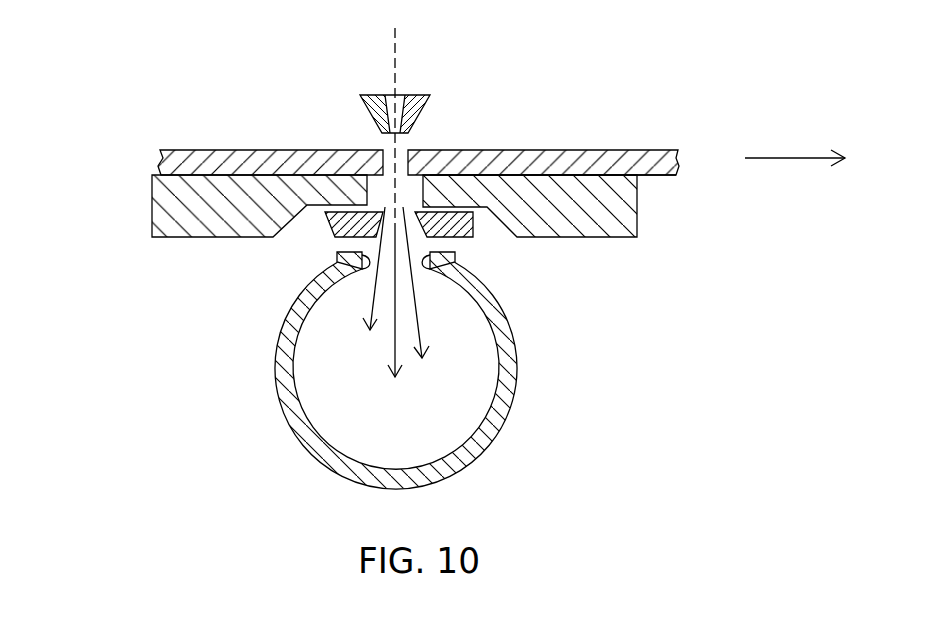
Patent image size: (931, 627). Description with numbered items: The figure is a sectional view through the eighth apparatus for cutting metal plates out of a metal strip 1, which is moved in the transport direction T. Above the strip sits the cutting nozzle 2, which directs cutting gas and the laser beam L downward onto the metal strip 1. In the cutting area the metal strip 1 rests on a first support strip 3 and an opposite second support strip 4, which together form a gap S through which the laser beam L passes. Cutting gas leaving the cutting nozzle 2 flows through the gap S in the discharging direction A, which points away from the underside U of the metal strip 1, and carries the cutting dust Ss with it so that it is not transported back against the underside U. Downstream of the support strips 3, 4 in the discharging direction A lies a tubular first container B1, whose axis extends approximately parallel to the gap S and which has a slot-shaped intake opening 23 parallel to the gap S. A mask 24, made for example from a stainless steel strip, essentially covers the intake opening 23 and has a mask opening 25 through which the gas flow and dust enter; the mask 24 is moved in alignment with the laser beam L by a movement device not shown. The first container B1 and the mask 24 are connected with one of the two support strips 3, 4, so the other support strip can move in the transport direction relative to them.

The metal strip 1 is at (620, 160).
The cutting nozzle 2 is at (430, 110).
The first support strip 3 is at (193, 207).
The second support strip 4 is at (620, 203).
The slot-shaped intake opening 23 is at (320, 282).
The mask 24 is at (338, 223).
The mask opening 25 is at (427, 243).
The gap S is at (411, 188).
The cutting dust Ss is at (415, 313).
The discharging direction A is at (395, 316).
The tubular first container B1 is at (465, 463).
The laser beam L is at (403, 127).
The transport direction T is at (795, 148).
The underside U is at (658, 177).